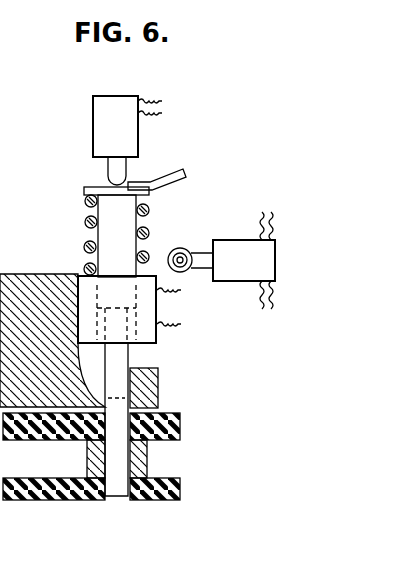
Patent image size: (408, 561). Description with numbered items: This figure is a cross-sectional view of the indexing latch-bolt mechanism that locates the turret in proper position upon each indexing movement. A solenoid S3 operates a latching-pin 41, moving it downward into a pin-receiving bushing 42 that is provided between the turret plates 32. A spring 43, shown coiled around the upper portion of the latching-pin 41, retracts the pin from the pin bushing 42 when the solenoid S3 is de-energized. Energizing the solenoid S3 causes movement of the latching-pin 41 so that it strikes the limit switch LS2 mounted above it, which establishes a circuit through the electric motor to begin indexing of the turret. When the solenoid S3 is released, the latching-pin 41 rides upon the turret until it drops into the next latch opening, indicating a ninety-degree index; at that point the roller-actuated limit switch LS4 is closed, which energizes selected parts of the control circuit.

The turret plates 32 is at (180, 478).
The latching-pin 41 is at (120, 222).
The pin-receiving bushing 42 is at (126, 494).
The spring 43 is at (85, 222).
The limit switch LS2 is at (127, 140).
The limit switch LS4 is at (221, 260).
The solenoid S3 is at (157, 310).